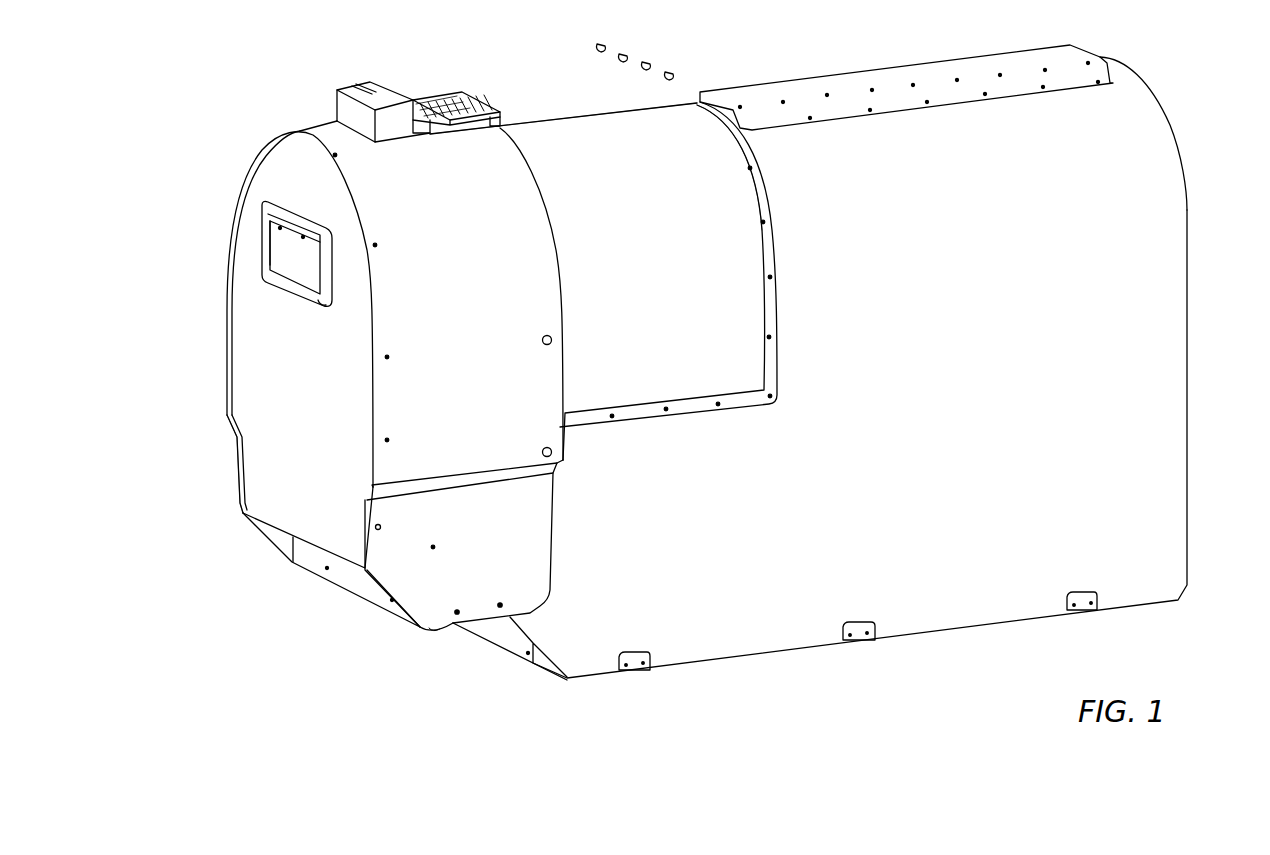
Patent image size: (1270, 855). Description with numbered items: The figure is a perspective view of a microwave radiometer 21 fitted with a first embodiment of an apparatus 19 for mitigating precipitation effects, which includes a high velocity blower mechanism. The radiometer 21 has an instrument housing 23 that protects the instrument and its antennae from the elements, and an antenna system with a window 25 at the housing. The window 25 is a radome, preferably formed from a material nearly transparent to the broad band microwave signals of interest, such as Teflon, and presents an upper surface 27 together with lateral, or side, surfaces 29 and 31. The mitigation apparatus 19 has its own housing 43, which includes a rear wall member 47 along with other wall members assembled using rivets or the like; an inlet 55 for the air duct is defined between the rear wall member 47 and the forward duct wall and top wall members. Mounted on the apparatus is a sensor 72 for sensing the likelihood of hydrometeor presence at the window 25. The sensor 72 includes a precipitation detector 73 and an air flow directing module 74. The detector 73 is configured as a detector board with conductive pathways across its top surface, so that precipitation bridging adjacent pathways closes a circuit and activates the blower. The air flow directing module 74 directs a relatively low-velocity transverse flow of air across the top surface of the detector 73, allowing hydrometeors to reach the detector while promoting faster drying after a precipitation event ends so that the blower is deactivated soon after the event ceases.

The apparatus for mitigating precipitation effects 19 is at (450, 583).
The microwave radiometer 21 is at (1138, 463).
The instrument housing 23 is at (1155, 197).
The window 25 is at (723, 282).
The upper surface 27 is at (565, 153).
The lateral surface 29 is at (713, 222).
The lateral surface 31 is at (526, 118).
The housing 43 is at (270, 165).
The rear wall member 47 is at (273, 490).
The inlet 55 is at (337, 565).
The sensor 72 is at (380, 92).
The precipitation detector 73 is at (404, 76).
The air flow directing module 74 is at (398, 128).